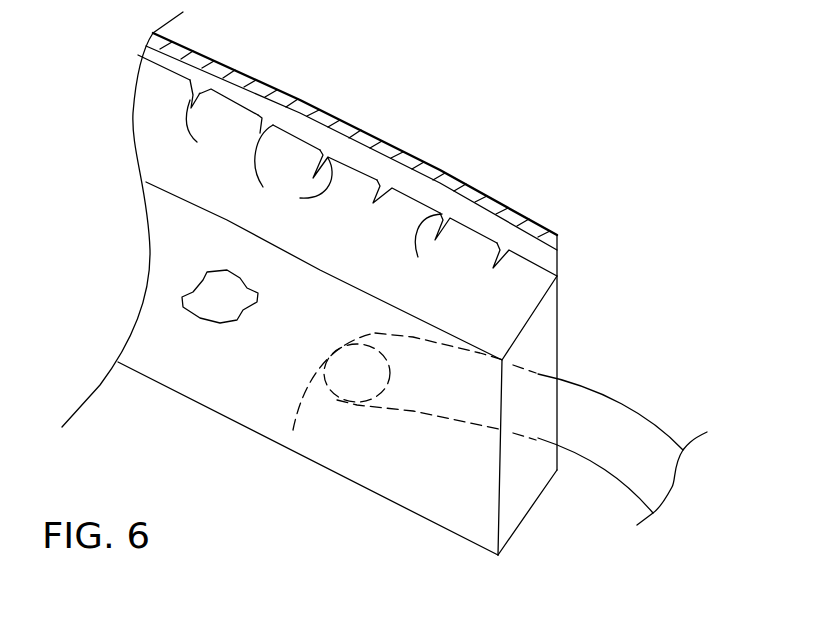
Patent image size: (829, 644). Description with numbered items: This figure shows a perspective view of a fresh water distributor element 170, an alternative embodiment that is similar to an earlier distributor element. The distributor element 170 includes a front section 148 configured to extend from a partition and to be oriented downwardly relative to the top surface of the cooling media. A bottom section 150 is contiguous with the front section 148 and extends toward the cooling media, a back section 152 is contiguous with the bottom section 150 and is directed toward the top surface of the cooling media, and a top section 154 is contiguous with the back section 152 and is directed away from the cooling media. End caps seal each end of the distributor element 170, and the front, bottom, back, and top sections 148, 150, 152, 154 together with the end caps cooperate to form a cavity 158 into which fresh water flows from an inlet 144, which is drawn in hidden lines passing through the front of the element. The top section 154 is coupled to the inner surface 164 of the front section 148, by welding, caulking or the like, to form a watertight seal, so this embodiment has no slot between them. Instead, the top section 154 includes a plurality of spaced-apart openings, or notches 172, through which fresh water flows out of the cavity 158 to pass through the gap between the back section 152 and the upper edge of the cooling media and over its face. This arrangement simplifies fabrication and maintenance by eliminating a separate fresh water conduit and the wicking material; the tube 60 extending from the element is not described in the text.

The fresh water distributor element 170 is at (745, 208).
The top section 154 is at (143, 134).
The inner surface of front section 164 is at (543, 258).
The notches 172 is at (492, 266).
The front section 148 is at (577, 330).
The back section 152 is at (403, 490).
The bottom section 150 is at (538, 545).
The cavity 158 is at (200, 295).
The inlet 144 is at (294, 442).
The tube 60 is at (670, 433).